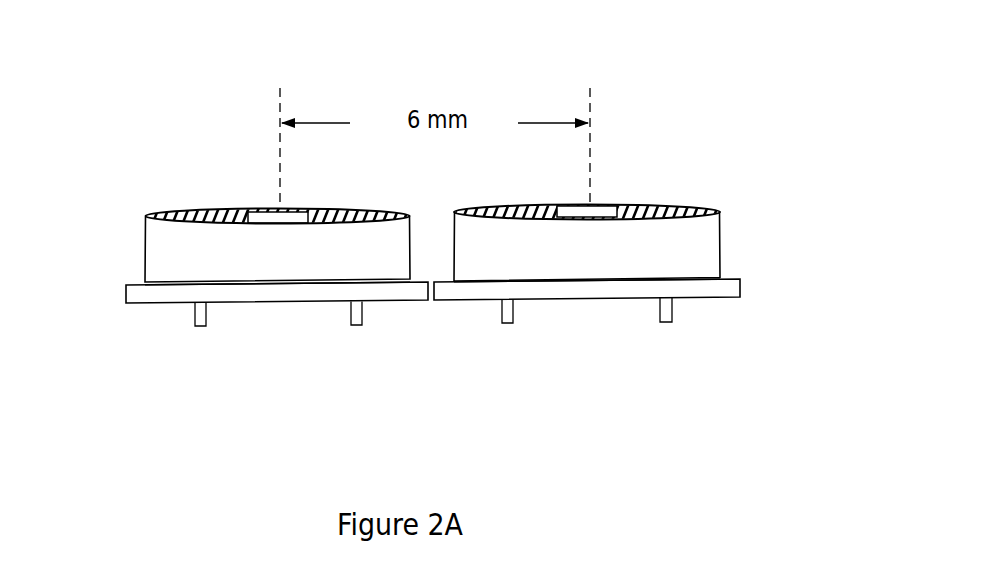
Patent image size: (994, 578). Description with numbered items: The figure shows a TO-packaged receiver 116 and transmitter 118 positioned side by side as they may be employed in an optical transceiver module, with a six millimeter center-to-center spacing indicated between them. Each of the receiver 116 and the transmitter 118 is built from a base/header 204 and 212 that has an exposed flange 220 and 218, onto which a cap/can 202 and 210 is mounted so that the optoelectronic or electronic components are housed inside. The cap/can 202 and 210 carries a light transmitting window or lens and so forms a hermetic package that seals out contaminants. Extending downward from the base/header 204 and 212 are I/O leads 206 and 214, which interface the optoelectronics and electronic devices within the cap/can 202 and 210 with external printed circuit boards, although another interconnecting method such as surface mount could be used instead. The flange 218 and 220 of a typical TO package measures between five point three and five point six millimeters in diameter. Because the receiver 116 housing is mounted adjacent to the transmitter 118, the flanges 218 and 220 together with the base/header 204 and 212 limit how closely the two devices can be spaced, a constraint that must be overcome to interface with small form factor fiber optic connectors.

The receiver 116 is at (152, 167).
The transmitter 118 is at (715, 157).
The cap/can 202 is at (144, 233).
The base/header 204 is at (145, 305).
The I/O leads 206 is at (356, 327).
The cap/can 210 is at (721, 224).
The base/header 212 is at (712, 292).
The I/O leads 214 is at (666, 322).
The flange 218 is at (730, 278).
The flange 220 is at (125, 284).